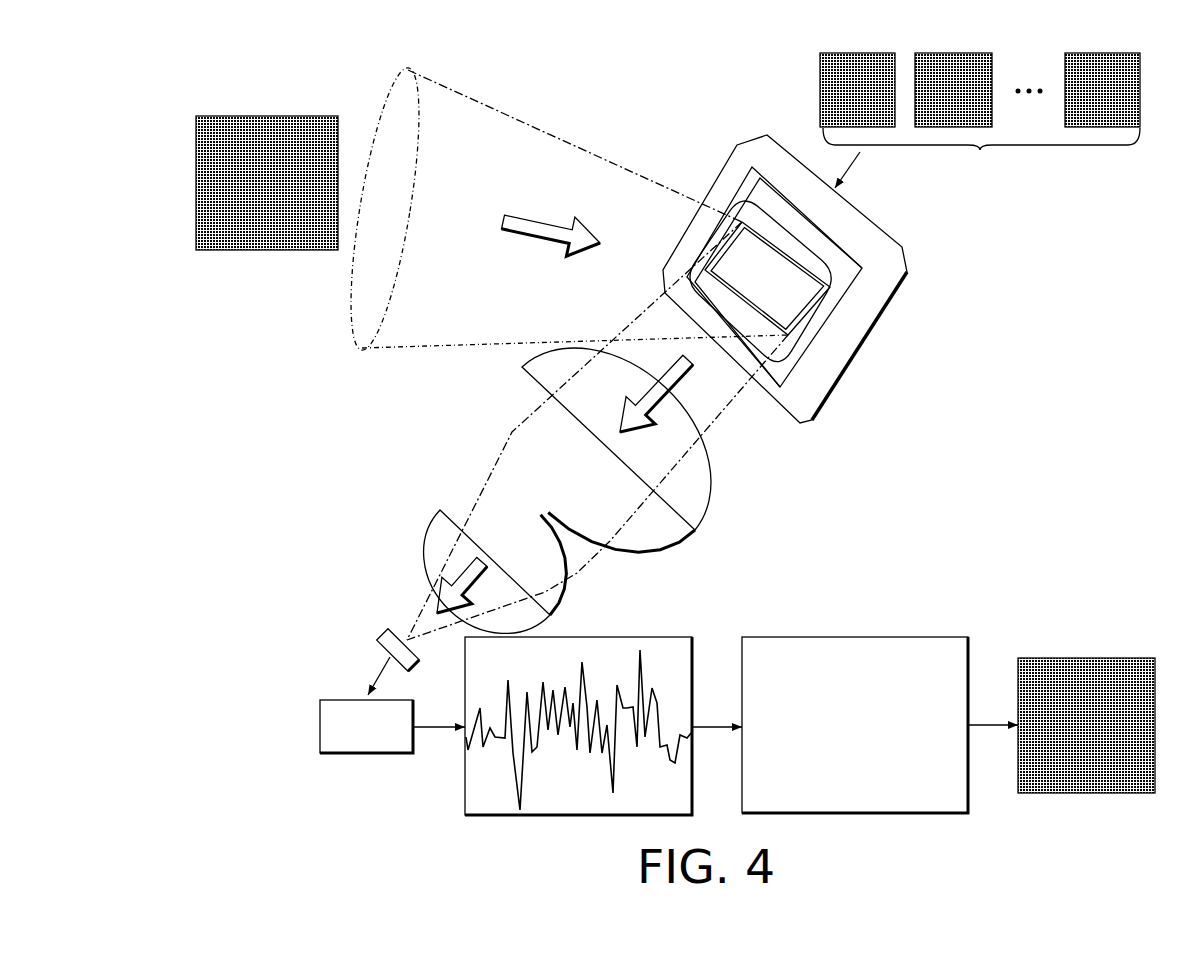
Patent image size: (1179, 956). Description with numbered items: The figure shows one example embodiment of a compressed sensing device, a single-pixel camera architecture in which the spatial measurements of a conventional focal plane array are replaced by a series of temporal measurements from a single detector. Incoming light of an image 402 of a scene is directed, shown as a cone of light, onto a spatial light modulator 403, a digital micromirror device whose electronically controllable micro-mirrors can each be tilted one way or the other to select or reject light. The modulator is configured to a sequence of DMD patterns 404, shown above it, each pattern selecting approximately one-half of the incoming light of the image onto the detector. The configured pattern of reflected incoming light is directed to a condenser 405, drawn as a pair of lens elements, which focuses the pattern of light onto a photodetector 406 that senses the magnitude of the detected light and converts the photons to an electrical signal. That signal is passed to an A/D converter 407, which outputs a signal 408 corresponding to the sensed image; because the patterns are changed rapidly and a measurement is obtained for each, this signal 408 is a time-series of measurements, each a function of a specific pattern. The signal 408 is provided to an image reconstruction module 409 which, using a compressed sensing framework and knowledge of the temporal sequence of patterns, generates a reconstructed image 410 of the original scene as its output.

The image of a scene 402 is at (268, 252).
The spatial light modulator 403 is at (868, 342).
The sequence of DMD patterns 404 is at (980, 148).
The condenser 405 is at (608, 565).
The photodetector 406 is at (380, 632).
The A/D converter 407 is at (332, 698).
The signal 408 is at (463, 772).
The image reconstruction module 409 is at (853, 637).
The reconstructed image 410 is at (1087, 658).